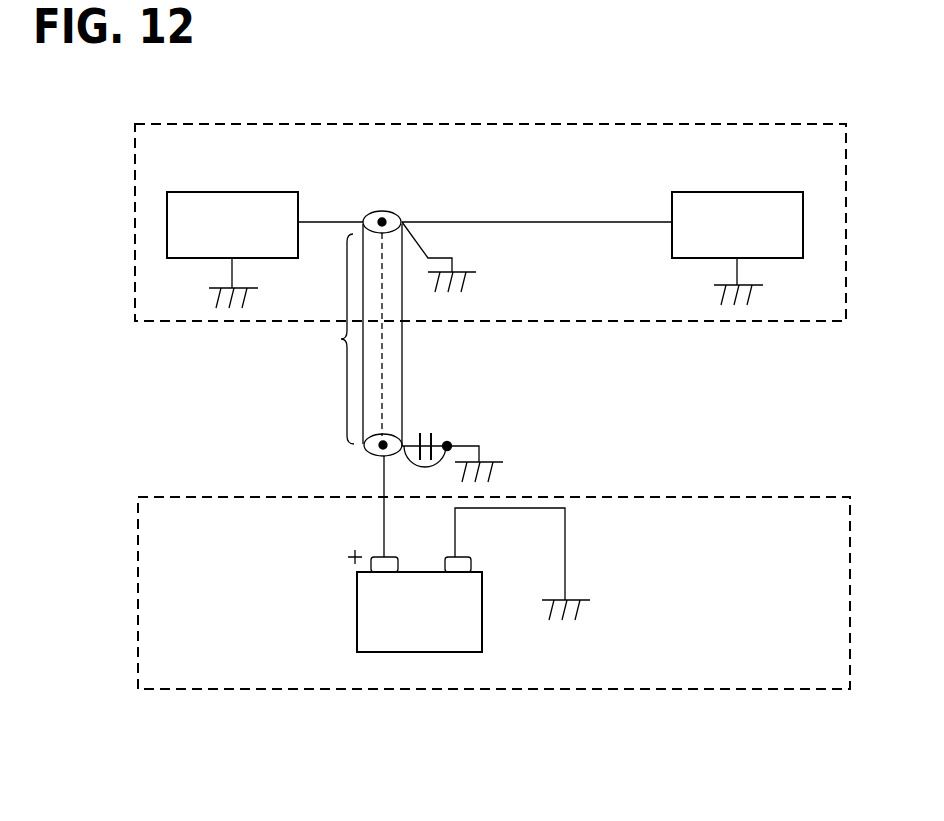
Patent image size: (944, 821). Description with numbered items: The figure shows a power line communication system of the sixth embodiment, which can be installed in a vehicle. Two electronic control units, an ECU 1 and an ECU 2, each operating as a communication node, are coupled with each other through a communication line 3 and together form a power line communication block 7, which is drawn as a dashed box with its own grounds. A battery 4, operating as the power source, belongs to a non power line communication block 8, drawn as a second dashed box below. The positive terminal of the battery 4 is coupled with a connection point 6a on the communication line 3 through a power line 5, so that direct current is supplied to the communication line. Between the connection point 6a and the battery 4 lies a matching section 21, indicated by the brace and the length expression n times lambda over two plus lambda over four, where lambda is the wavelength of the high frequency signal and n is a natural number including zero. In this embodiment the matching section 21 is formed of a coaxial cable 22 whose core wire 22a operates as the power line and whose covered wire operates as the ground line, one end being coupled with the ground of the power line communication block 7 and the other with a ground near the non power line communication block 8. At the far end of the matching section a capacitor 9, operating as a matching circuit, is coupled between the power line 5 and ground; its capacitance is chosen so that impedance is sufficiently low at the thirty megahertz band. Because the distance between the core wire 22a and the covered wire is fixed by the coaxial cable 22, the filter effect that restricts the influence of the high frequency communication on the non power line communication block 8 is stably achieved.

The electronic control unit 1 is at (224, 192).
The electronic control unit 2 is at (734, 192).
The communication line 3 is at (547, 222).
The battery 4 is at (357, 605).
The power line 5 is at (384, 484).
The branch point 6a is at (377, 210).
The power line communication block 7 is at (477, 123).
The non power line communication block 8 is at (572, 495).
The capacitor 9 is at (412, 468).
The matching section 21 is at (322, 413).
The coaxial cable 22 is at (402, 217).
The core wire 22a is at (386, 398).